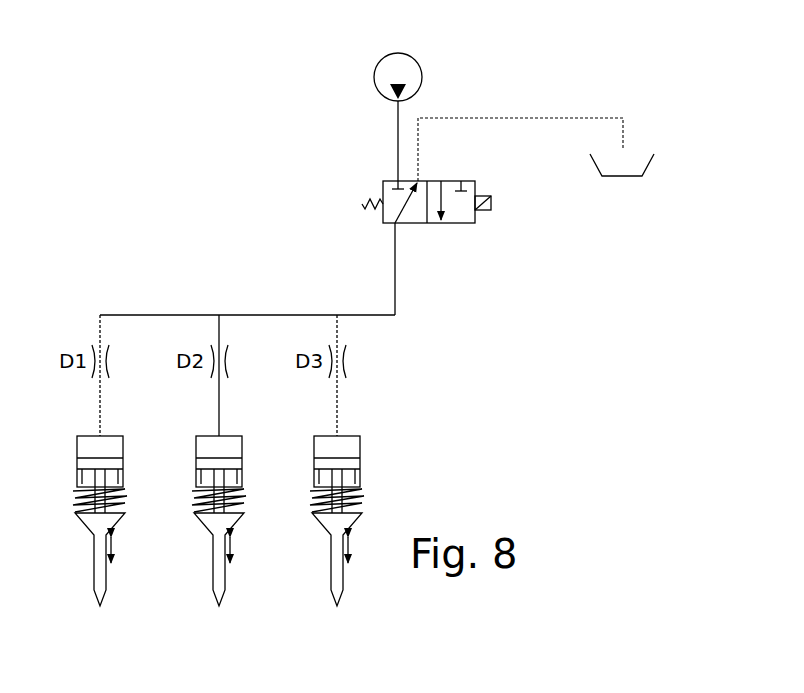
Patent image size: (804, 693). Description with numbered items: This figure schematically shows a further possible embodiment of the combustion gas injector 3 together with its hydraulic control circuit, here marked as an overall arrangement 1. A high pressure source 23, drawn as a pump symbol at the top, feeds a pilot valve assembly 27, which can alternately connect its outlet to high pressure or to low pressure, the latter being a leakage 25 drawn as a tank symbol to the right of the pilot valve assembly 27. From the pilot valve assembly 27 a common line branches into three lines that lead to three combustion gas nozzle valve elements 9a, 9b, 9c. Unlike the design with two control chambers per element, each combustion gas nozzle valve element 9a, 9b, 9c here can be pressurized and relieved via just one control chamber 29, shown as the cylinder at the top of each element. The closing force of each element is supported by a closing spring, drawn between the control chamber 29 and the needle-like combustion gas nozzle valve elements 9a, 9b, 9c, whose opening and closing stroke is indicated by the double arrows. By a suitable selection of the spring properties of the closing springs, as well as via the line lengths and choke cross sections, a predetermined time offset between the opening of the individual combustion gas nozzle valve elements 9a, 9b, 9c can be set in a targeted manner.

The dispensing system 1 is at (213, 230).
The combustion gas injector 3 is at (328, 210).
The high pressure source 23 is at (410, 80).
The leakage 25 is at (638, 150).
The pilot valve assembly 27 is at (452, 232).
The control chamber 29 is at (96, 452).
The combustion gas nozzle valve element 9a is at (100, 577).
The combustion gas nozzle valve element 9b is at (218, 578).
The combustion gas nozzle valve element 9c is at (338, 583).